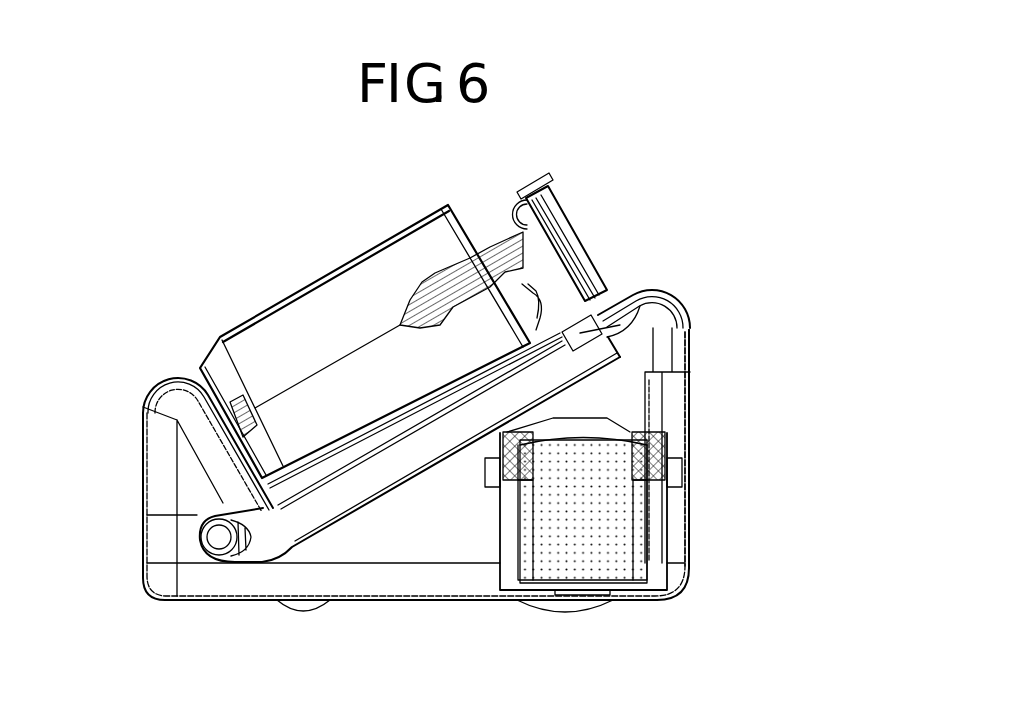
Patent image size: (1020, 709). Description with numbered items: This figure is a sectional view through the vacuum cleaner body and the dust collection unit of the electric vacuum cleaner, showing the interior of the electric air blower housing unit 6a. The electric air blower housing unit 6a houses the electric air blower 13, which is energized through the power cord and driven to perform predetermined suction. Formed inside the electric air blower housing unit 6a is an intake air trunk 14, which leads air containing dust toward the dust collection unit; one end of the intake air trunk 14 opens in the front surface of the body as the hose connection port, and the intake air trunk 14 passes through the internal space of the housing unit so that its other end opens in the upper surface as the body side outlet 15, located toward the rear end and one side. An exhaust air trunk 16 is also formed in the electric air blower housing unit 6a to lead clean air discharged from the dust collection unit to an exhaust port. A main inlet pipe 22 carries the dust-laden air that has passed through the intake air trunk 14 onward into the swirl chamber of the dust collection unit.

The electric air blower housing unit 6a is at (688, 443).
The electric air blower 13 is at (615, 532).
The intake air trunk 14 is at (335, 502).
The body side outlet 15 is at (667, 291).
The exhaust air trunk 16 is at (603, 400).
The main inlet pipe 22 is at (552, 288).